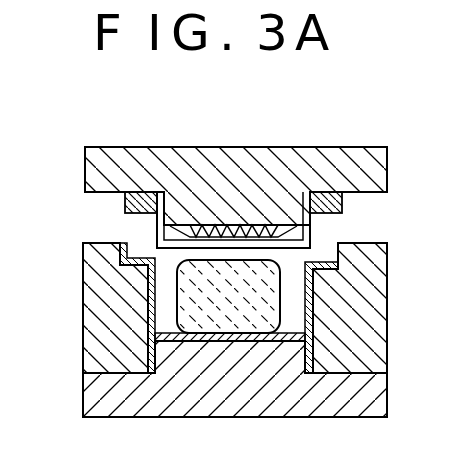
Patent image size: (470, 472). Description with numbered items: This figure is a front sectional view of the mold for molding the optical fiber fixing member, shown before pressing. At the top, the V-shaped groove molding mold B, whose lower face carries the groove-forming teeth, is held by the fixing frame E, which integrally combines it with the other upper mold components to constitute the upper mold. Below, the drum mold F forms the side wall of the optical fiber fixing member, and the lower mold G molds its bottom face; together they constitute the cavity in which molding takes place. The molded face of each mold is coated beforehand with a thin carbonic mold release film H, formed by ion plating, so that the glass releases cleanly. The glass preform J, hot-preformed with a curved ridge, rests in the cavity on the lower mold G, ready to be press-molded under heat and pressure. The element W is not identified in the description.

The V-shaped groove molding mold B is at (316, 166).
The fixing frame E is at (343, 207).
The carbonic mold release film H is at (184, 227).
The drum mold F is at (106, 313).
The glass preform J is at (313, 334).
The lower mold G is at (226, 390).
The workpiece W is at (228, 296).